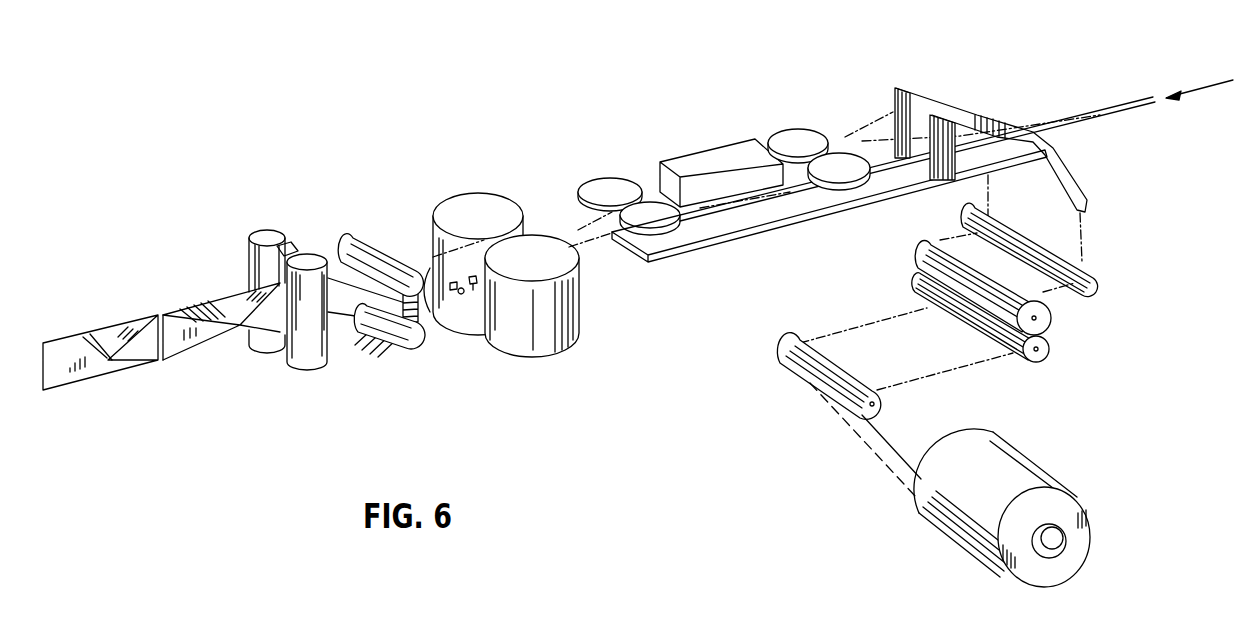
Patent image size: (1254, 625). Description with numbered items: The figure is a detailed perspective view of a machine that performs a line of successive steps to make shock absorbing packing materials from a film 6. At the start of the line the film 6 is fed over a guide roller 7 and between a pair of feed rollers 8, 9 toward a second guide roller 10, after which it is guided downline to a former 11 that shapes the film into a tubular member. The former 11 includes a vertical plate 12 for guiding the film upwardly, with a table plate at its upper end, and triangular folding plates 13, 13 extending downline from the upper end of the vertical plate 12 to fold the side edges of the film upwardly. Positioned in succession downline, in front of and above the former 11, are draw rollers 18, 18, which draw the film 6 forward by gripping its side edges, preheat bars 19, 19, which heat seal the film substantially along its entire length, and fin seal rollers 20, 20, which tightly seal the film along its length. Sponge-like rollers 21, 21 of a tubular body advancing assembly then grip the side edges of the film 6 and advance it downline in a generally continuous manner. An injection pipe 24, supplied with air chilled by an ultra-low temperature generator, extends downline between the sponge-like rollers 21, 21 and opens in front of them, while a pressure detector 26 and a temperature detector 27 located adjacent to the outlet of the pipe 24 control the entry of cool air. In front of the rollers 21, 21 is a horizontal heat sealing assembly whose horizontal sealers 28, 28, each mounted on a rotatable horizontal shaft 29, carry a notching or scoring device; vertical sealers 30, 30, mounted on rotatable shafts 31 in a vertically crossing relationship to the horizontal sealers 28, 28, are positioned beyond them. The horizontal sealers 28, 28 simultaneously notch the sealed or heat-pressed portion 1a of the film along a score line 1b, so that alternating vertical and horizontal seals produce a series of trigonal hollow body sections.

The sealed or heat-pressed portion 1a is at (203, 303).
The score line 1b is at (83, 338).
The film 6 is at (963, 362).
The guide roller 7 is at (783, 340).
The feed roller 8 is at (1049, 352).
The feed roller 9 is at (1051, 318).
The second guide roller 10 is at (1097, 282).
The former 11 is at (1040, 92).
The vertical plate 12 is at (1093, 202).
The triangular folding plate 13 is at (955, 118).
The draw roller 18 is at (850, 155).
The preheat bar 19 is at (737, 163).
The fin seal roller 20 is at (650, 202).
The sponge-like roller 21 is at (538, 238).
The injection pipe 24 is at (606, 245).
The pressure detector 26 is at (473, 290).
The temperature detector 27 is at (458, 292).
The horizontal sealer 28 is at (402, 306).
The rotatable horizontal shaft 29 is at (372, 243).
The vertical sealer 30 is at (300, 246).
The rotatable shaft 31 is at (248, 252).